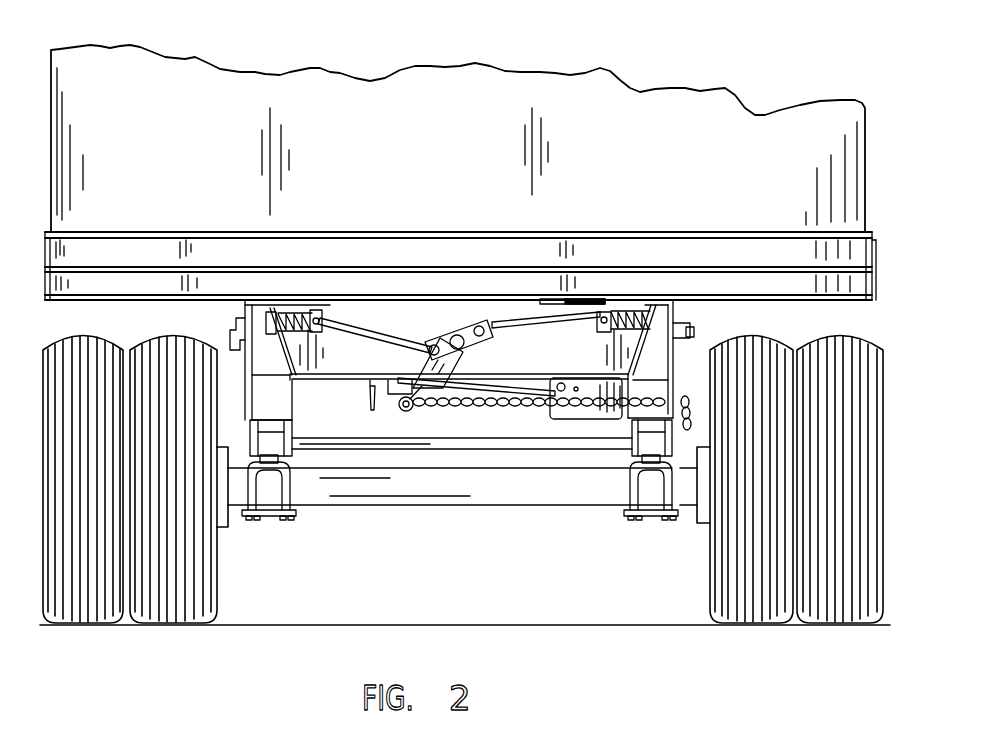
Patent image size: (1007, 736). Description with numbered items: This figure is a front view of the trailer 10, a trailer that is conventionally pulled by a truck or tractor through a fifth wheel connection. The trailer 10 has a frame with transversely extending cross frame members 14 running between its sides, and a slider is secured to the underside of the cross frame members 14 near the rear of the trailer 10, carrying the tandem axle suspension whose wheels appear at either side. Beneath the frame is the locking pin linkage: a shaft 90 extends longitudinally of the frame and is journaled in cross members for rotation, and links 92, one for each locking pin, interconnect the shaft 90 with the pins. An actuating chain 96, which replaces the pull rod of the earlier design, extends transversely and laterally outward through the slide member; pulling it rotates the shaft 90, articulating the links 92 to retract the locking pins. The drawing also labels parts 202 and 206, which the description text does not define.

The trailer 10 is at (288, 56).
The cross frame members 14 is at (384, 250).
The shaft 90 is at (450, 335).
The links 92 is at (366, 337).
The actuating chain 96 is at (511, 405).
The spring assembly 202 is at (600, 300).
The sensor plate 206 is at (547, 290).